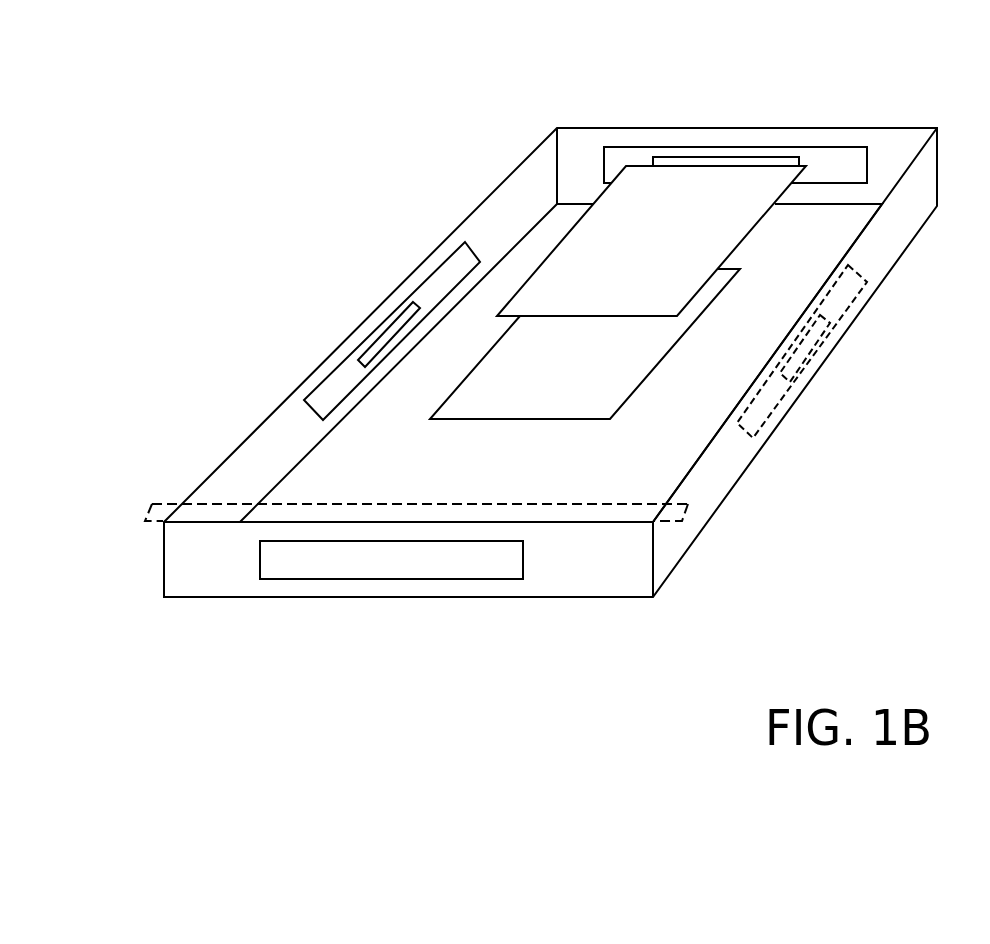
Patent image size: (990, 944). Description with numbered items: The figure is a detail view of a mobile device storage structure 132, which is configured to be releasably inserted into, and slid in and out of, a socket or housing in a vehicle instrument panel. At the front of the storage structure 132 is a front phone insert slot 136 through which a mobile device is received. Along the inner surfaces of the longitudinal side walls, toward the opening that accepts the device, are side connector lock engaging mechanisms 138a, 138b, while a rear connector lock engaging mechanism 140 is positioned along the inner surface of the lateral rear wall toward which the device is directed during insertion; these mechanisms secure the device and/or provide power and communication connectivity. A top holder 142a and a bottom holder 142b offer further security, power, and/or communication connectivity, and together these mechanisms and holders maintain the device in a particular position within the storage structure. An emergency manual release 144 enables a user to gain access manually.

The mobile device storage structure 132 is at (540, 74).
The rear connector lock engaging mechanism 140 is at (745, 147).
The top holder 142a is at (755, 224).
The bottom holder 142b is at (652, 372).
The side connector lock engaging mechanism 138a is at (378, 324).
The side connector lock engaging mechanism 138b is at (810, 355).
The emergency manual release 144 is at (388, 503).
The front phone insert slot 136 is at (492, 580).